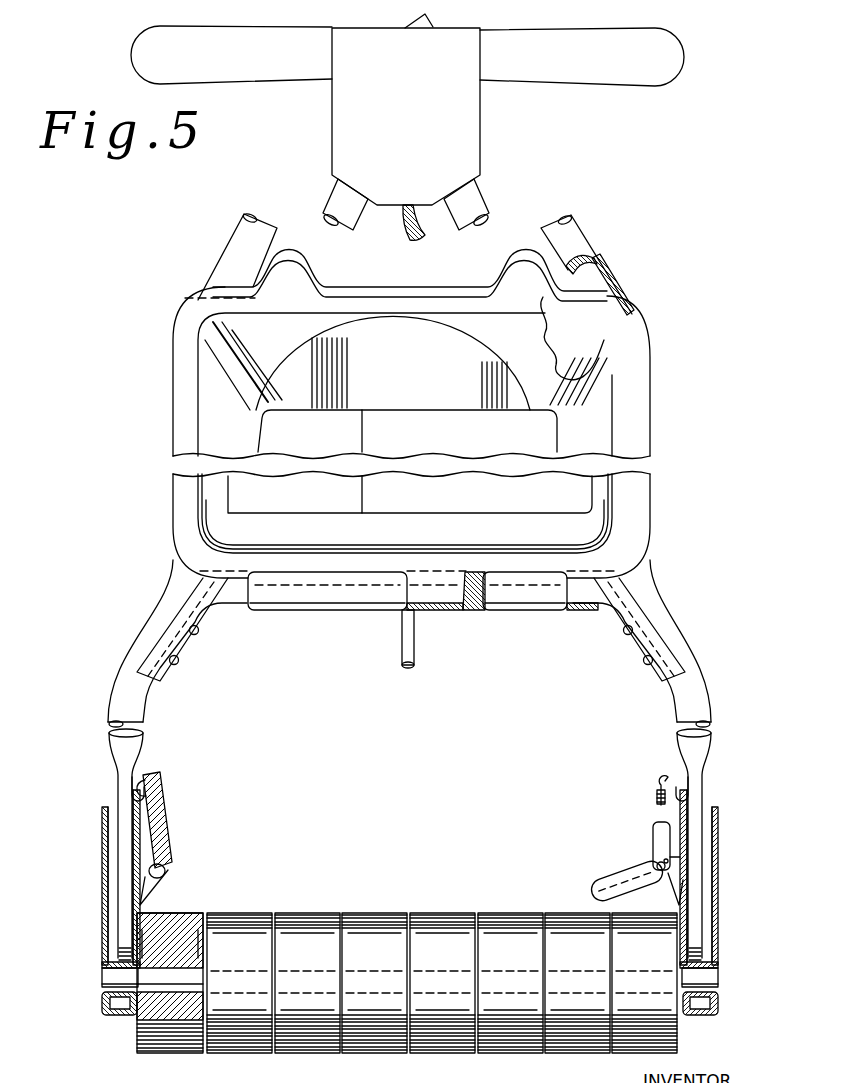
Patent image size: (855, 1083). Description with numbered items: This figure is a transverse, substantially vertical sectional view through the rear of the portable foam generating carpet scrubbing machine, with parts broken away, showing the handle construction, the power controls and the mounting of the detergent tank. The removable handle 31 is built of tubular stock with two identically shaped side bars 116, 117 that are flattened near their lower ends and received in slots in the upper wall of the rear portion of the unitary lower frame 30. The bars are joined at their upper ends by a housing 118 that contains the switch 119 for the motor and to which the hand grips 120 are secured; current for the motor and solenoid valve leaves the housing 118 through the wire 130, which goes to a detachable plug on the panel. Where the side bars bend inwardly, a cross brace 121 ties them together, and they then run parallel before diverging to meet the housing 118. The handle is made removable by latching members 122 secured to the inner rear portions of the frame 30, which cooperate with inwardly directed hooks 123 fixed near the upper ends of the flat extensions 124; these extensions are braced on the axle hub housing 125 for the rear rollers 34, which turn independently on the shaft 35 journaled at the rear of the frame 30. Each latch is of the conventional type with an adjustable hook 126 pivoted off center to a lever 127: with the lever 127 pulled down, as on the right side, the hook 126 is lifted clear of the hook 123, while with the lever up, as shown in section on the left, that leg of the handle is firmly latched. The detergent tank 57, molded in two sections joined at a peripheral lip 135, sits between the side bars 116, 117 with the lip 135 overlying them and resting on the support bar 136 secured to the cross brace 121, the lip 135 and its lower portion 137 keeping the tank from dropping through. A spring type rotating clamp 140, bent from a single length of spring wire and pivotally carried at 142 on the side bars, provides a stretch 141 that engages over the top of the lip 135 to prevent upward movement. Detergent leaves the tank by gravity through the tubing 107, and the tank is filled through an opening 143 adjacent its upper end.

The housing 118 is at (423, 126).
The switch 119 is at (426, 20).
The hand grips 120 is at (226, 73).
The wire 130 is at (422, 232).
The handle 31 is at (338, 200).
The spring type rotating clamp 140 is at (498, 276).
The pivot points of spring clamp 142 is at (645, 290).
The peripheral lip 135 is at (652, 409).
The stretch of spring clamp 141 is at (403, 310).
The detergent tank 57 is at (325, 445).
The filling opening 143 is at (398, 394).
The cross brace 121 is at (239, 600).
The support bar 136 is at (371, 595).
The lower portion of peripheral lip 137 is at (483, 607).
The tubing 107 is at (416, 652).
The side bar 117 is at (150, 613).
The side bar 116 is at (688, 643).
The inwardly directed hooks 123 is at (140, 773).
The lower frame member 30 is at (103, 921).
The flat extensions 124 is at (122, 867).
The shaft 35 is at (113, 978).
The axle hub housing 125 is at (117, 1010).
The latching members 122 is at (162, 800).
The adjustable hook 126 is at (163, 818).
The lever 127 is at (168, 838).
The rollers 34 is at (357, 912).